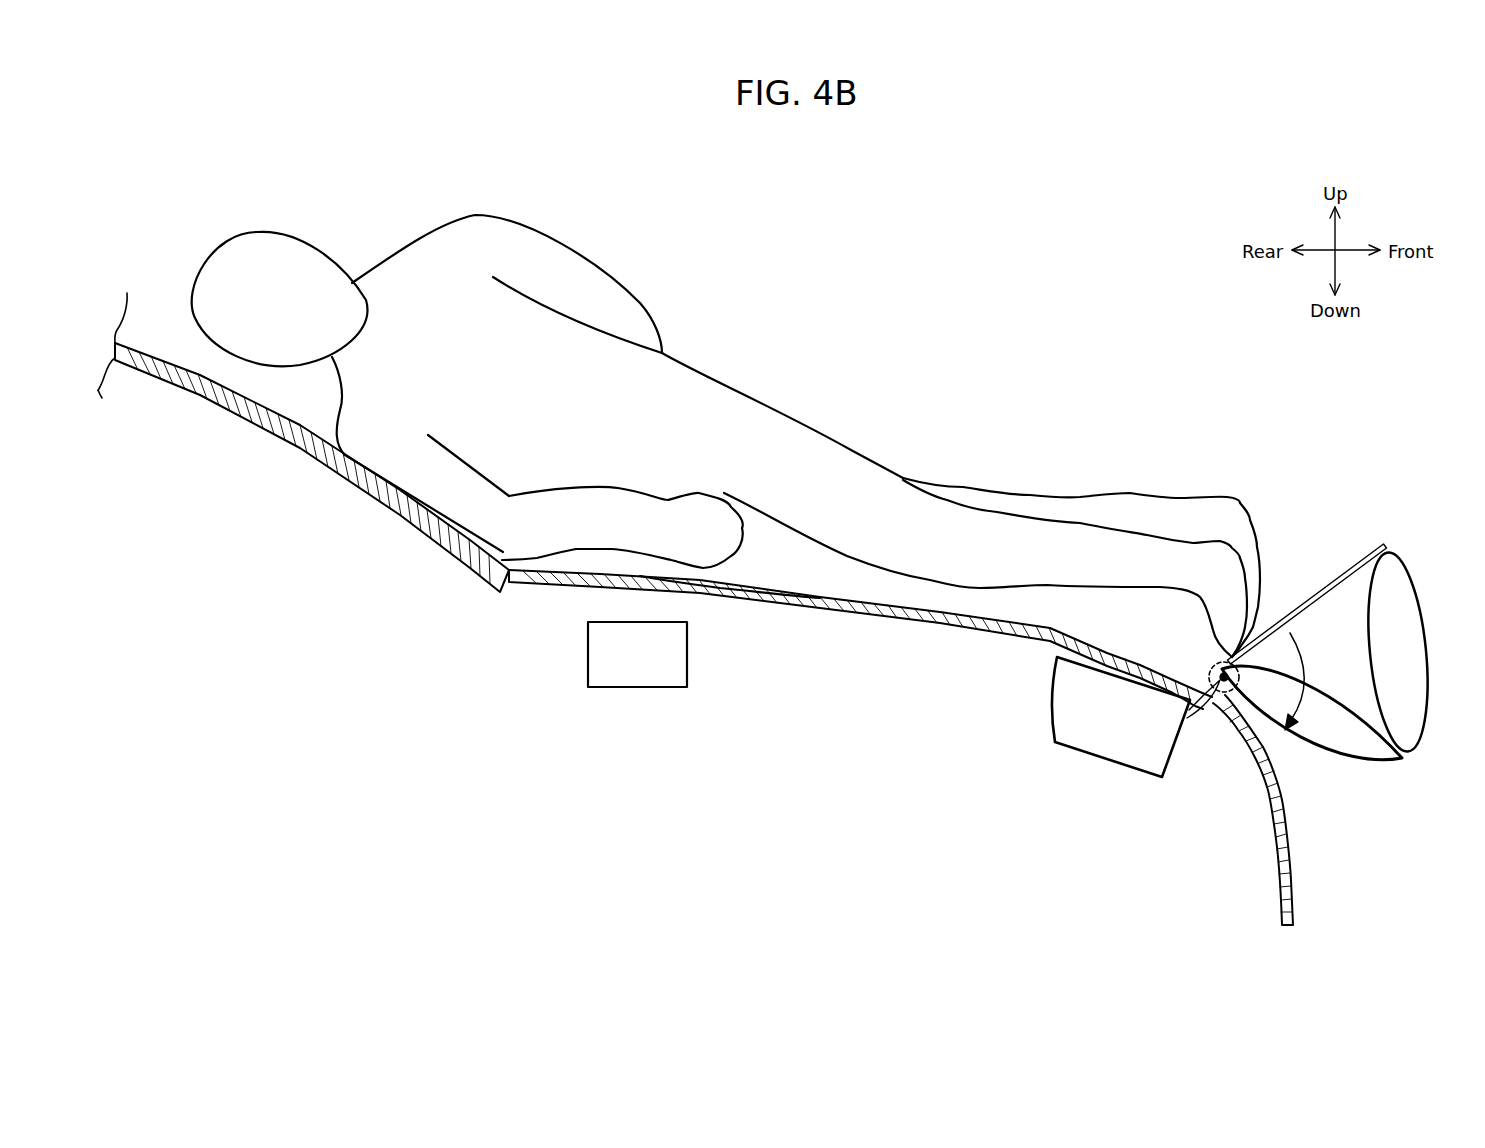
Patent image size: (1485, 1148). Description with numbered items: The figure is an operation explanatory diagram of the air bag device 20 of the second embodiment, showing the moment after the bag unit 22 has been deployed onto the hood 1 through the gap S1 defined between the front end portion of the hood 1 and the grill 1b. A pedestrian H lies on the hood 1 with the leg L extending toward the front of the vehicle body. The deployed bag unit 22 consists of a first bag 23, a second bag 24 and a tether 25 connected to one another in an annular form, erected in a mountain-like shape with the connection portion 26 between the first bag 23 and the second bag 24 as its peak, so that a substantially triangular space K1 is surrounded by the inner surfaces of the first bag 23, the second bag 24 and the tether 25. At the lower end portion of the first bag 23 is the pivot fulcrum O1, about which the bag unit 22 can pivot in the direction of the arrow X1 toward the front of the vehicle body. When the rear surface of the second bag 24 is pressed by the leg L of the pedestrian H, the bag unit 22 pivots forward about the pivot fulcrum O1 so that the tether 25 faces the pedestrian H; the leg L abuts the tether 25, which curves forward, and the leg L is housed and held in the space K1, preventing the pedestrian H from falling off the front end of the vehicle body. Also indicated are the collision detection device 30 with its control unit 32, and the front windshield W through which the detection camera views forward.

The hood 1 is at (840, 614).
The grill 1b is at (1295, 882).
The air bag device 20 is at (1103, 757).
The bag unit 22 is at (1334, 640).
The first bag 23 is at (1323, 760).
The second bag 24 is at (1421, 620).
The tether 25 is at (1303, 595).
The connection portion 26 is at (1416, 776).
The collision detection device 30 is at (637, 688).
The control unit 32 is at (639, 691).
The pedestrian H is at (752, 392).
The leg L is at (1180, 563).
The front windshield W is at (303, 456).
The pivot fulcrum O1 is at (1208, 670).
The gap S1 is at (1211, 726).
The arrow X1 is at (1303, 663).
The space K1 is at (1361, 669).